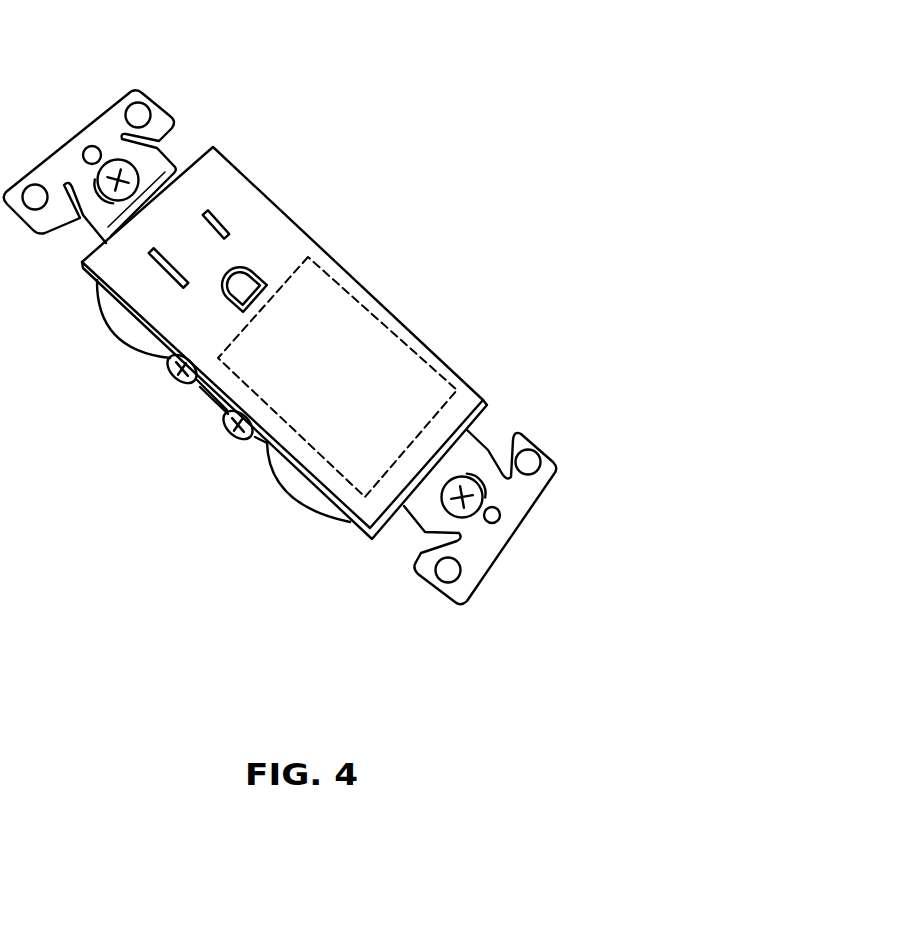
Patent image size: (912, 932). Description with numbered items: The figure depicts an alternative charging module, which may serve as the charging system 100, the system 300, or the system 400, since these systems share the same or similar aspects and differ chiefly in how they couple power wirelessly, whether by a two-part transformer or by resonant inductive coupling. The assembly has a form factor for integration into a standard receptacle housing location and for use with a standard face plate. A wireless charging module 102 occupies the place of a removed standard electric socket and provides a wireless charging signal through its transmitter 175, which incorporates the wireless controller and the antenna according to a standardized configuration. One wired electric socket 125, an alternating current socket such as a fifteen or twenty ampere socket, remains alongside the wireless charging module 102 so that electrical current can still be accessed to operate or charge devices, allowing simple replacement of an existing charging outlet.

The charging system 100 is at (466, 88).
The system 300 is at (299, 323).
The system 400 is at (296, 335).
The wireless charging module 102 is at (278, 250).
The electric socket 125 is at (168, 320).
The transmitter 175 is at (423, 398).